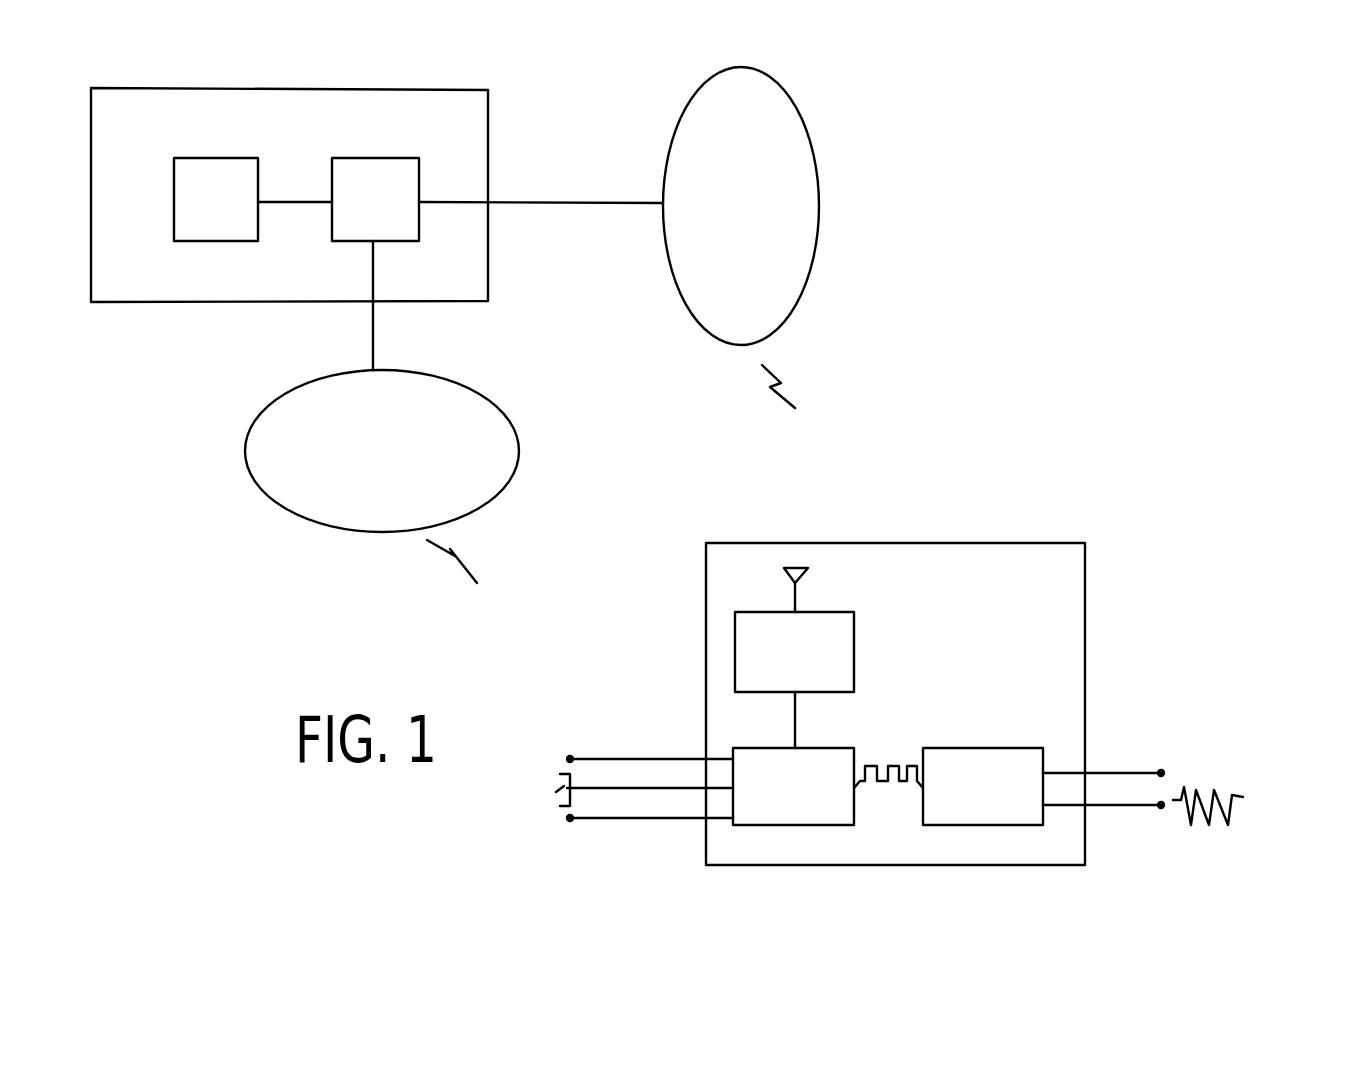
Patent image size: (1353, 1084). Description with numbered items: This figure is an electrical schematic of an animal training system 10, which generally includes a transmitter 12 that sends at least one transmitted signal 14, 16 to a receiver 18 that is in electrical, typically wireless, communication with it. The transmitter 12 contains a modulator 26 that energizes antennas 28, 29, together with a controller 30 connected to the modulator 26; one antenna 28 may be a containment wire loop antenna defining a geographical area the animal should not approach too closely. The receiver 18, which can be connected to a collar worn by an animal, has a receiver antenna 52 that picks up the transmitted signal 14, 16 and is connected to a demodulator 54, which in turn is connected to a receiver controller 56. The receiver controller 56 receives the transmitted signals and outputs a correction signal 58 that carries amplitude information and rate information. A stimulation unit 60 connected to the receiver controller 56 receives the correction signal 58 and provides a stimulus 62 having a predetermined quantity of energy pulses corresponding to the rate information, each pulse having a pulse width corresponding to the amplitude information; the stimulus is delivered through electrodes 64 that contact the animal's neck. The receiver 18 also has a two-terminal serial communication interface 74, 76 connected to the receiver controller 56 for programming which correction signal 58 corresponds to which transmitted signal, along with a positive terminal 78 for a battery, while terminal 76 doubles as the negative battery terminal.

The animal training system 10 is at (1023, 282).
The transmitter 12 is at (408, 89).
The transmitted signal 14 is at (438, 547).
The transmitted signal 16 is at (785, 393).
The receiver 18 is at (1017, 520).
The modulator 26 is at (400, 241).
The antenna 28 is at (248, 463).
The antenna 29 is at (678, 122).
The controller 30 is at (190, 241).
The receiver antenna 52 is at (797, 568).
The demodulator 54 is at (735, 652).
The receiver controller 56 is at (778, 825).
The correction signal 58 is at (887, 765).
The stimulation unit 60 is at (965, 825).
The stimulus 62 is at (1243, 797).
The electrodes 64 is at (1161, 773).
The communication interface 74 is at (566, 757).
The communication interface 76 is at (558, 792).
The + terminal 78 is at (570, 818).